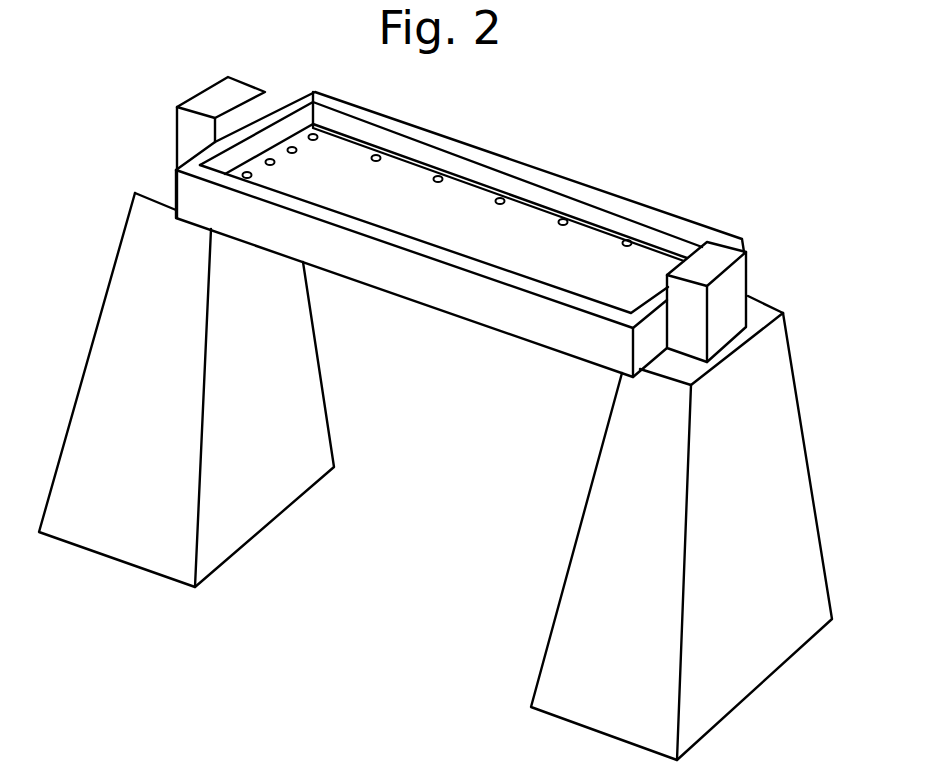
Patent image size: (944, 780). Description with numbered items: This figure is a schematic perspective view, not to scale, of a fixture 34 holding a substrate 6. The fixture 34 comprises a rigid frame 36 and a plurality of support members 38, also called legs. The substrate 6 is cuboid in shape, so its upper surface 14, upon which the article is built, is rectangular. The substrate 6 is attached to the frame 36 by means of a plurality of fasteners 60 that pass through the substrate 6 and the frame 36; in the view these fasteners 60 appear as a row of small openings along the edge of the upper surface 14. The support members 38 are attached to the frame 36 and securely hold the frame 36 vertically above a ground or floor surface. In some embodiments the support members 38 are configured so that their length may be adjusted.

The fixture 34 is at (131, 154).
The rigid frame 36 is at (435, 294).
The support members 38 is at (110, 345).
The upper surface 14 is at (525, 260).
The substrate 6 is at (413, 185).
The fasteners 60 is at (247, 172).